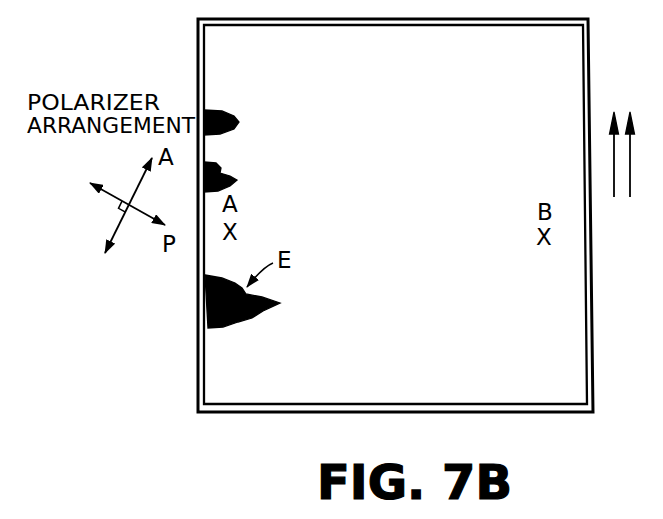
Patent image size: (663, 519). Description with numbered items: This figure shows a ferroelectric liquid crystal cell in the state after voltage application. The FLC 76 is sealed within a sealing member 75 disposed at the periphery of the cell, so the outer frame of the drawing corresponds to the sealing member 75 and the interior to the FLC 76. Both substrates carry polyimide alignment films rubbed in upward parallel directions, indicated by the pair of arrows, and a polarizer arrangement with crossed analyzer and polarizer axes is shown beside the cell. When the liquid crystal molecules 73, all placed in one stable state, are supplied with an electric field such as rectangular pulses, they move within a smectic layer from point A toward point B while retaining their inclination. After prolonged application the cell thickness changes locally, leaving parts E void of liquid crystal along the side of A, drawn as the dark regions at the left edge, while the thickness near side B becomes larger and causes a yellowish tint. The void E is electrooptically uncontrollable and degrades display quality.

The liquid crystal molecules 73 is at (662, 38).
The sealing member 75 is at (592, 278).
The FLC 76 is at (567, 366).